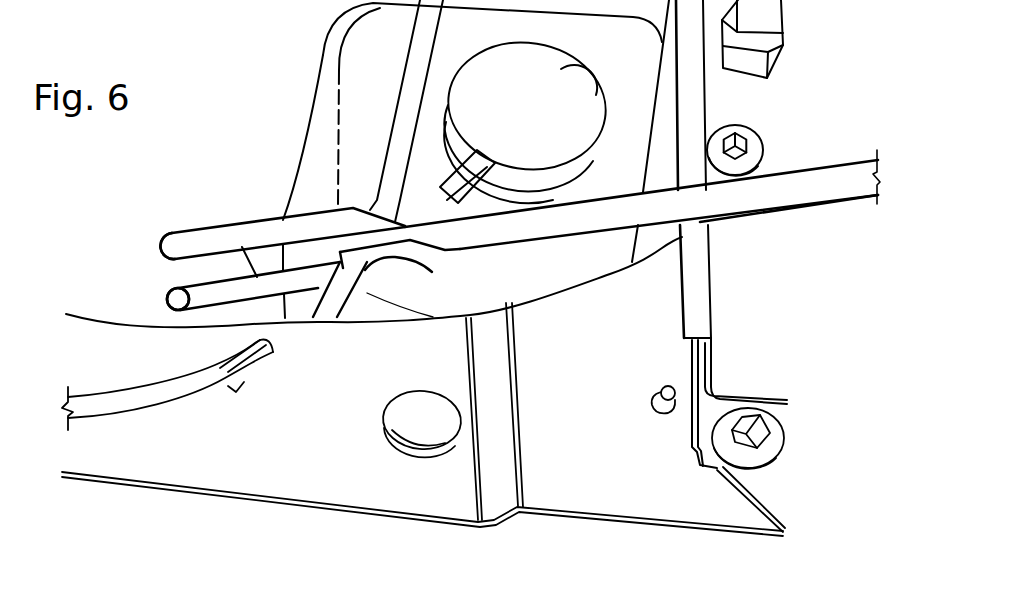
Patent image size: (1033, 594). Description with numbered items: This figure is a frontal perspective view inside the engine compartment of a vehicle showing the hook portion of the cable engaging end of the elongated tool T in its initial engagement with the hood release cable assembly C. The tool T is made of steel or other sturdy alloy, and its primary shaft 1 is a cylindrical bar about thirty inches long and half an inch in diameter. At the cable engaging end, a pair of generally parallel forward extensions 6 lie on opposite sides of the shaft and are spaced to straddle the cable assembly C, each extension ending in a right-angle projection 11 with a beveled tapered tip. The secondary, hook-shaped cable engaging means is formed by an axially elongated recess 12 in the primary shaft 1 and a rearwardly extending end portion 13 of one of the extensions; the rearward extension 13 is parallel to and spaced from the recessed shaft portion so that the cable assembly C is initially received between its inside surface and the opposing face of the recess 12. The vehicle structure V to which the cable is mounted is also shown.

The primary shaft 1 is at (788, 193).
The forward extensions 6 is at (237, 293).
The projections 11 is at (172, 260).
The axially elongated recess 12 is at (410, 247).
The rearwardly extending end portion 13 is at (377, 278).
The hood release cable assembly C is at (402, 152).
The elongated tool T is at (835, 208).
The plate V is at (558, 518).